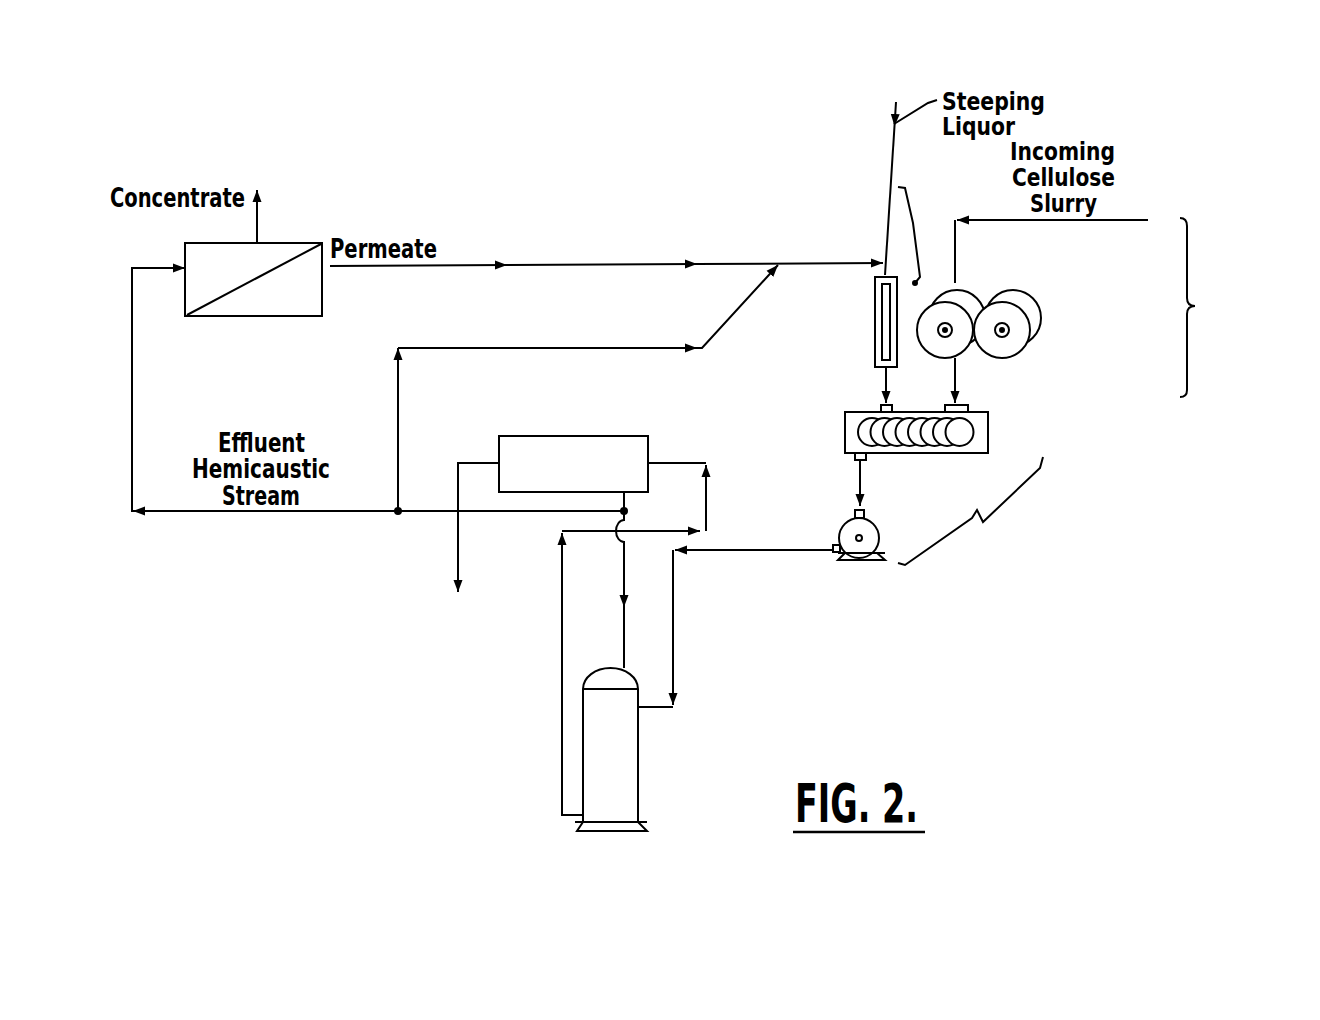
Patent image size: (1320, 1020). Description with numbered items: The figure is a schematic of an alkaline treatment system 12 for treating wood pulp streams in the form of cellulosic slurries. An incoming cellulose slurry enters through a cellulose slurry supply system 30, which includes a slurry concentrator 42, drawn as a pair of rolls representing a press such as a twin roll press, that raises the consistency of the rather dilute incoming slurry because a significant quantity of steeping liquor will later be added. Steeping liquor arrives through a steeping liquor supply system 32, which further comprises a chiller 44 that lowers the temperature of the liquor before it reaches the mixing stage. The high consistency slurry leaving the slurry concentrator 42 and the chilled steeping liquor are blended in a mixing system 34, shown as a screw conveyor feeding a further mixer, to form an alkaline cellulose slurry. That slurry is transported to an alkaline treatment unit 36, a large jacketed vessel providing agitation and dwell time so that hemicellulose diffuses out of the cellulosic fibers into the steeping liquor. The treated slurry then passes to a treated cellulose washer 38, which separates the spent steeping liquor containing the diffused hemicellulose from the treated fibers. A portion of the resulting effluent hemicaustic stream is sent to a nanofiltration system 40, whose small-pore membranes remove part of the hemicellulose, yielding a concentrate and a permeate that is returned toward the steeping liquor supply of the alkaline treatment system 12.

The alkaline treatment system 12 is at (1220, 162).
The cellulose slurry supply system 30 is at (1205, 307).
The steeping liquor supply system 32 is at (913, 223).
The mixing system 34 is at (938, 511).
The alkaline treatment unit 36 is at (623, 745).
The treated cellulose washer 38 is at (512, 443).
The nanofiltration system 40 is at (348, 296).
The slurry concentrator 42 is at (1035, 347).
The chiller 44 is at (875, 319).